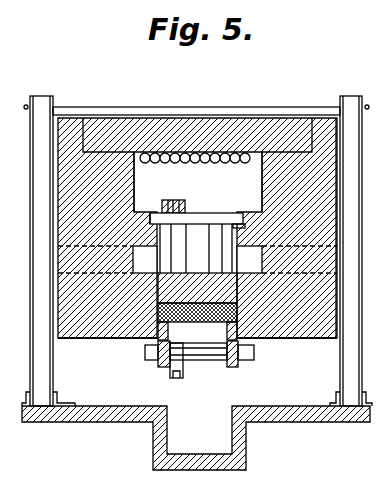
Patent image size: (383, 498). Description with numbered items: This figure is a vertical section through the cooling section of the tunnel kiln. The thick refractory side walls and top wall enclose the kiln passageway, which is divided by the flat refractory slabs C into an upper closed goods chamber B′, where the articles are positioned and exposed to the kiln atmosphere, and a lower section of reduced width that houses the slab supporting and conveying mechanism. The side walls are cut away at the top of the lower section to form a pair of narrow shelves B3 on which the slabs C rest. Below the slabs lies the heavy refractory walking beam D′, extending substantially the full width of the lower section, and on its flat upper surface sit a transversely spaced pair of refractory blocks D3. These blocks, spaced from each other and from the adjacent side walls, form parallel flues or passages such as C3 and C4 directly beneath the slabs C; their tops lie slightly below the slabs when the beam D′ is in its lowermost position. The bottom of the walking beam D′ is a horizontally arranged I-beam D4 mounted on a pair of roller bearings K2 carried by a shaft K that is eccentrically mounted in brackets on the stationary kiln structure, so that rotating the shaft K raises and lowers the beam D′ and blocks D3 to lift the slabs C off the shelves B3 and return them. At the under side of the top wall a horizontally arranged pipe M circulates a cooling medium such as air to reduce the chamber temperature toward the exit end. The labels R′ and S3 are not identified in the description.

The pipes M is at (228, 150).
The upright post R′ is at (350, 266).
The walking beam section D′ is at (97, 338).
The side wall S3 is at (248, 231).
The upper closed goods chamber B′ is at (198, 182).
The shelves B3 is at (141, 226).
The refractory slabs C is at (237, 214).
The refractory blocks D3 is at (178, 230).
The flue or passage C4 is at (196, 248).
The flue or passage C3 is at (163, 256).
The I-beam D4 is at (255, 346).
The shafts K is at (196, 356).
The roller bearings K2 is at (167, 361).